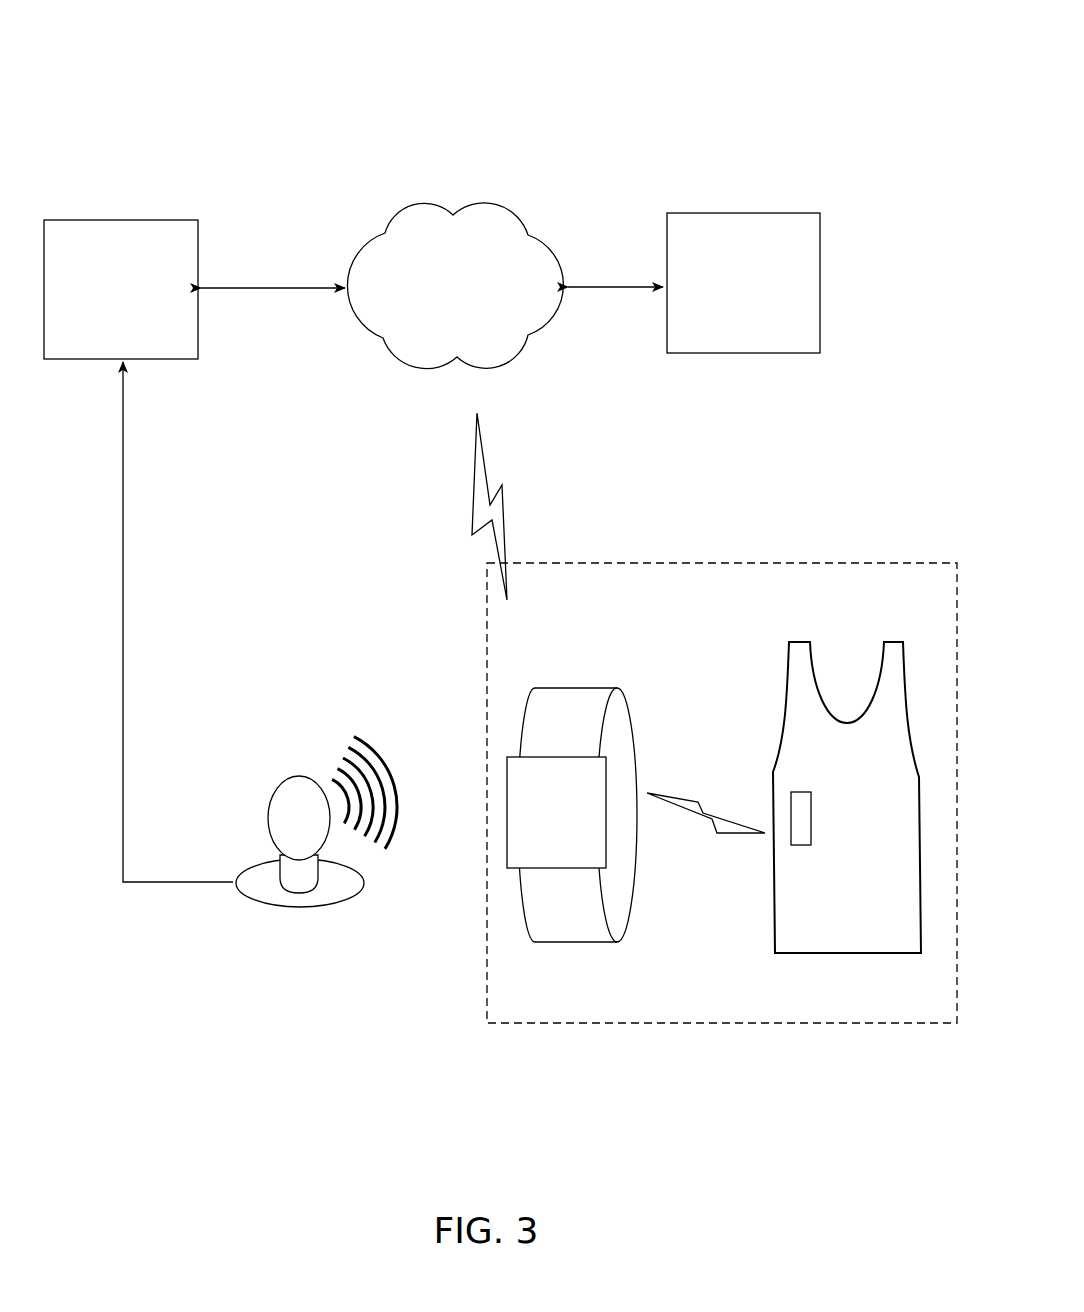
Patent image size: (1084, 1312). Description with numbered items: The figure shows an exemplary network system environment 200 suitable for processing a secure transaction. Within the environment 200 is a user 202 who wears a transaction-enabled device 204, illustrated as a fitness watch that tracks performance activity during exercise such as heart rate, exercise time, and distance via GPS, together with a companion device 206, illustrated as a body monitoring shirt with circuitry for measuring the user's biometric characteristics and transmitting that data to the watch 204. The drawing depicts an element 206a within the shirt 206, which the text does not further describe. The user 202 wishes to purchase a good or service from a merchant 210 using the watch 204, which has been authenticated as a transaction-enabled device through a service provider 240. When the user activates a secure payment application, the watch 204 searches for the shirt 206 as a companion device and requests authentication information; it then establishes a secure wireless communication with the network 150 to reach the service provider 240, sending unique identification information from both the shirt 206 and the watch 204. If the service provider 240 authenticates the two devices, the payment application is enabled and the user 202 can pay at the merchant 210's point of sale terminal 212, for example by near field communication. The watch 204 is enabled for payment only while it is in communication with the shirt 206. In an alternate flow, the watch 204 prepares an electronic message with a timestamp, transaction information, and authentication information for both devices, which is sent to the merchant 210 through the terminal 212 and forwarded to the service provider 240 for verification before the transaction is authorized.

The environment 200 is at (572, 107).
The network 150 is at (455, 286).
The merchant 210 is at (121, 289).
The service provider 240 is at (743, 283).
The user 202 is at (719, 563).
The transaction-enabled device 204 is at (576, 688).
The companion device 206 is at (805, 797).
The garment-embedded device 206a is at (800, 846).
The point of sale terminal 212 is at (268, 800).